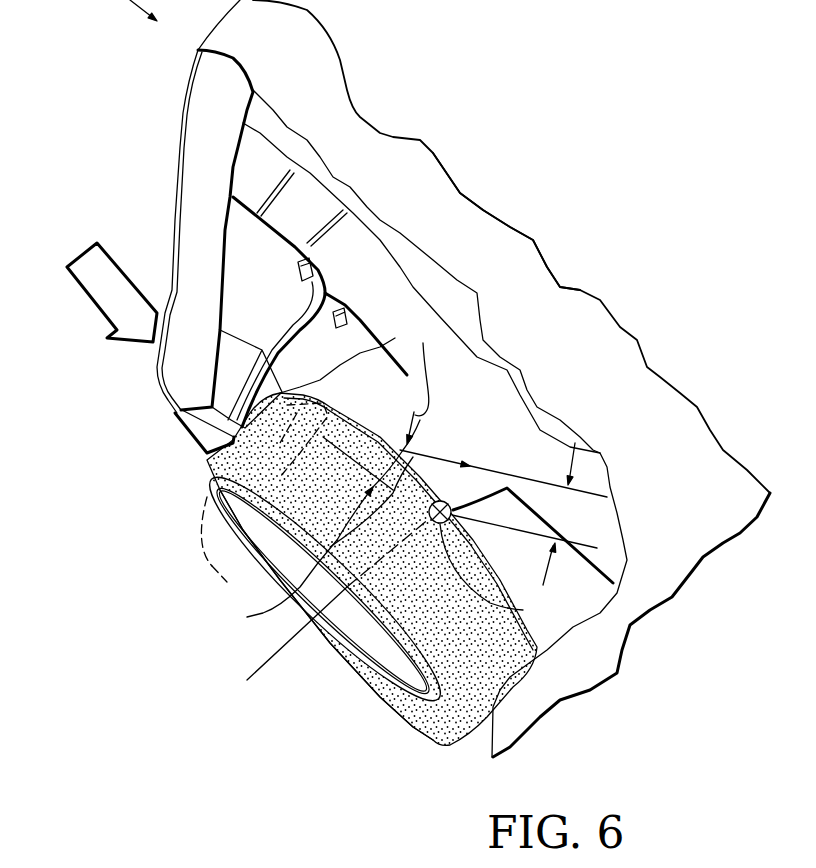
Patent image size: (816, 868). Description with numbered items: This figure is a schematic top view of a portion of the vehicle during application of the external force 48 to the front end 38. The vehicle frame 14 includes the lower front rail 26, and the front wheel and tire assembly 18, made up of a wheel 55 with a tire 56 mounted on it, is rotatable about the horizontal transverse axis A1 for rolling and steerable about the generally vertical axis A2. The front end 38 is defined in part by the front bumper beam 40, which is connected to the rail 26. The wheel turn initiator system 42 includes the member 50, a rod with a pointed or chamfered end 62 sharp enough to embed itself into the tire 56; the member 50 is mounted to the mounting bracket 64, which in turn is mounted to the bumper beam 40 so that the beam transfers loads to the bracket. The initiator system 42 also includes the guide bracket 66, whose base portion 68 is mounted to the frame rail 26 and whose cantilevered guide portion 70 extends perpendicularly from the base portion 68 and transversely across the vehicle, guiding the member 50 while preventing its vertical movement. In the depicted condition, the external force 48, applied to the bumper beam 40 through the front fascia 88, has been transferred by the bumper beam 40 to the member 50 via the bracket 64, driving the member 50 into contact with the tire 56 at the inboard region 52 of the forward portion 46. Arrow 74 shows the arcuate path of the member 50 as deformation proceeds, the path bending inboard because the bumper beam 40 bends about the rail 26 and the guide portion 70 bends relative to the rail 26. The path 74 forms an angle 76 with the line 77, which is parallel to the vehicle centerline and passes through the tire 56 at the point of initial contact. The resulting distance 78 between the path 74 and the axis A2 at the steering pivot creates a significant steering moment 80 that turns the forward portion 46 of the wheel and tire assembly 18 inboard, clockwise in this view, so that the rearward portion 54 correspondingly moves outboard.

The vehicle frame 14 is at (400, 273).
The front rail 26 is at (443, 248).
The front wheel and tire assembly 18 is at (487, 660).
The front end 38 is at (173, 263).
The front bumper beam 40 is at (207, 170).
The wheel turn initiator system 42 is at (166, 443).
The forward portion 46 is at (213, 482).
The external force 48 is at (90, 300).
The member 50 is at (204, 531).
The inboard region 52 is at (390, 443).
The rearward portion 54 is at (453, 740).
The wheel 55 is at (380, 652).
The tire 56 is at (342, 662).
The pointed or chamfered end 62 is at (222, 585).
The mounting bracket 64 is at (230, 363).
The guide bracket 66 is at (300, 300).
The base portion 68 is at (330, 292).
The cantilevered guide portion 70 is at (355, 296).
The arrow / arcuate path 74 is at (443, 455).
The angle 76 is at (425, 383).
The line 77 is at (322, 525).
The distance 78 is at (597, 453).
The steering moment 80 is at (313, 623).
The front fascia 88 is at (180, 93).
The horizontal transverse axis A1 is at (258, 672).
The generally vertical axis A2 is at (523, 610).